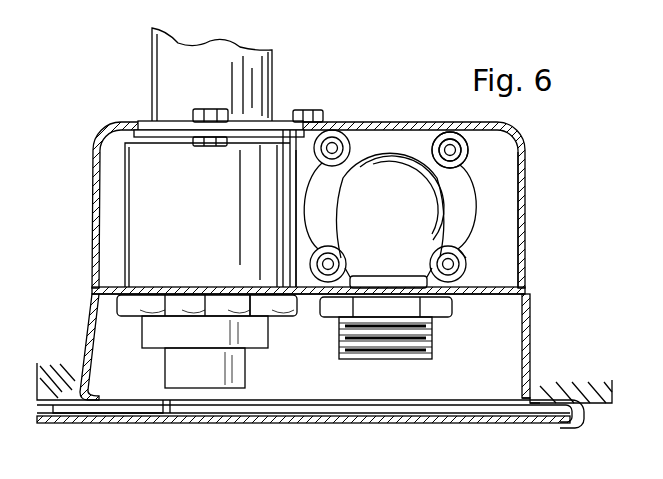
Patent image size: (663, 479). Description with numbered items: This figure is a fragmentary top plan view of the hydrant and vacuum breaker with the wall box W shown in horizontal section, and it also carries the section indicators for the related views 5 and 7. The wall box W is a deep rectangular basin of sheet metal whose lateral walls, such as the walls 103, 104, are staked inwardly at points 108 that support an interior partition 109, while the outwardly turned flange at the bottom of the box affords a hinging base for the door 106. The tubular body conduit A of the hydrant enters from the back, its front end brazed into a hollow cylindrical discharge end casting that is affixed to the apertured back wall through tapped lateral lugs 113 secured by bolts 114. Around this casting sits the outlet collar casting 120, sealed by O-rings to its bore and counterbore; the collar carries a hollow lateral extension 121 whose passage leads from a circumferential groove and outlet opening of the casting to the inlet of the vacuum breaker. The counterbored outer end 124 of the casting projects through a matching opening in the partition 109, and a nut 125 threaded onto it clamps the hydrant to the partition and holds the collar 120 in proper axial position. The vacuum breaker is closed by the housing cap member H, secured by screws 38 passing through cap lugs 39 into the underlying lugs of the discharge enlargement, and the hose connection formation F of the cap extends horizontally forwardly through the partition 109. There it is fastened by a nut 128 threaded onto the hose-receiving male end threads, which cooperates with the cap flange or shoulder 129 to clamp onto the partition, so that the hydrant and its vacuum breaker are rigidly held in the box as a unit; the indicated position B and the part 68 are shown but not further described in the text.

The section line 5- 5 is at (204, 447).
The section line 7- 7 is at (53, 204).
The wall box W is at (94, 121).
The tubular body conduit A is at (275, 72).
The housing cap member H is at (366, 155).
The bracket B is at (486, 197).
The hose connection formation F is at (430, 257).
The screws 38 is at (455, 147).
The cap lugs 39 is at (461, 160).
The valve body 68 is at (141, 330).
The lateral wall 103 is at (478, 386).
The lateral wall 104 is at (86, 310).
The door 106 is at (446, 405).
The staked points 108 is at (88, 274).
The interior partition 109 is at (108, 296).
The lateral lugs 113 is at (200, 133).
The bolts 114 is at (200, 109).
The outlet collar casting 120 is at (184, 181).
The hollow lateral extension 121 is at (296, 216).
The counterbored outer end 124 is at (223, 290).
The nut 125 is at (140, 294).
The nut 128 is at (452, 311).
The cap flange or shoulder 129 is at (356, 262).